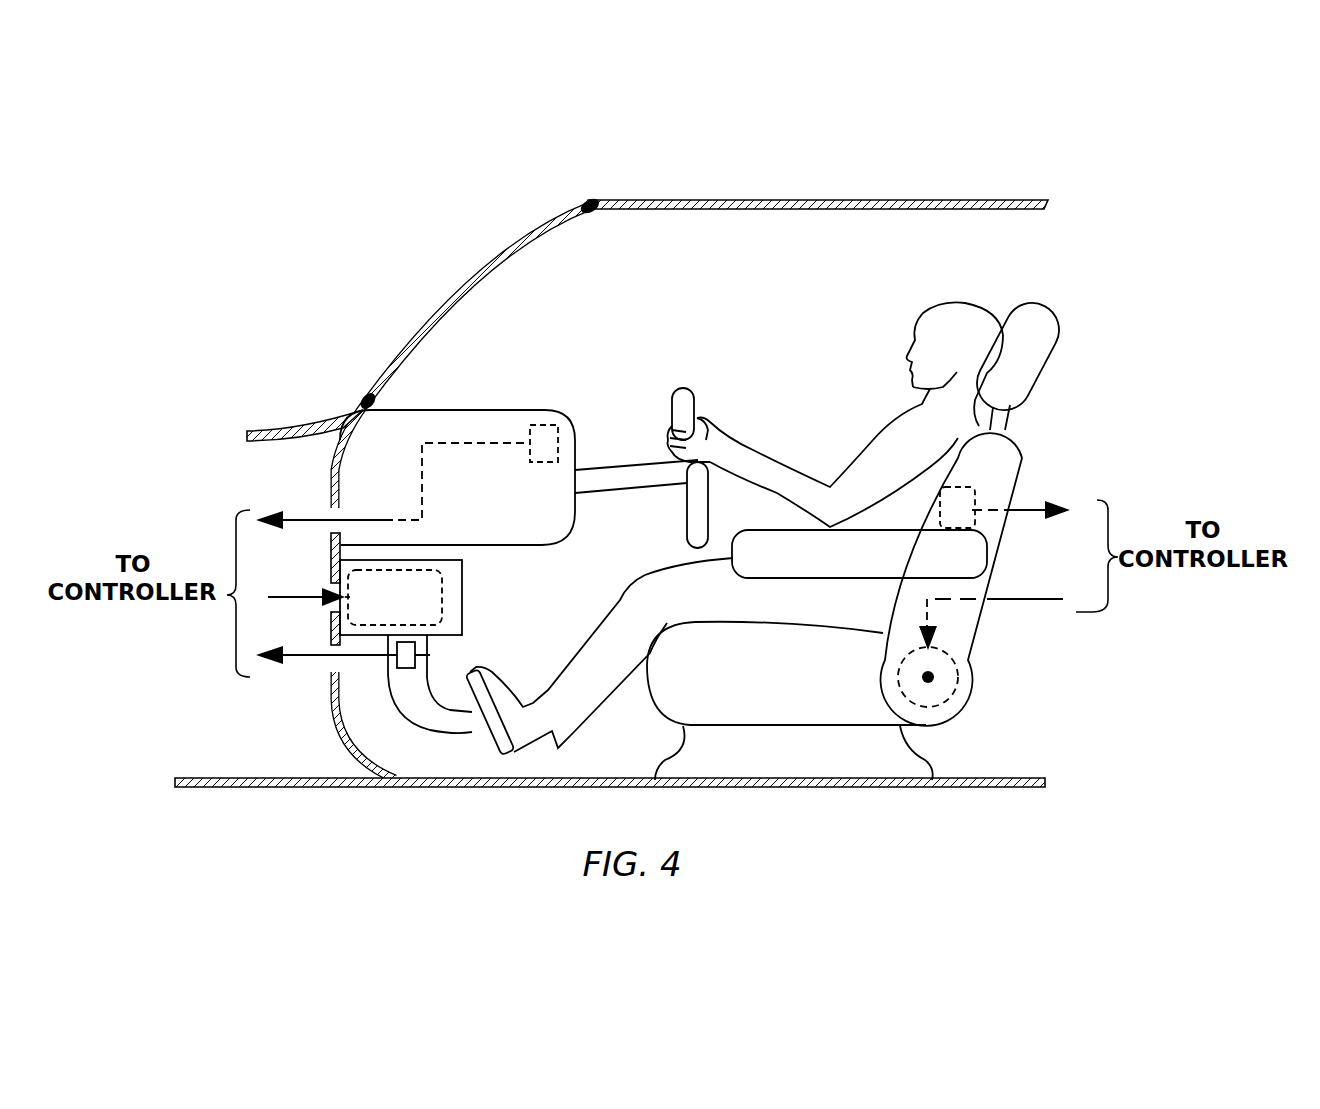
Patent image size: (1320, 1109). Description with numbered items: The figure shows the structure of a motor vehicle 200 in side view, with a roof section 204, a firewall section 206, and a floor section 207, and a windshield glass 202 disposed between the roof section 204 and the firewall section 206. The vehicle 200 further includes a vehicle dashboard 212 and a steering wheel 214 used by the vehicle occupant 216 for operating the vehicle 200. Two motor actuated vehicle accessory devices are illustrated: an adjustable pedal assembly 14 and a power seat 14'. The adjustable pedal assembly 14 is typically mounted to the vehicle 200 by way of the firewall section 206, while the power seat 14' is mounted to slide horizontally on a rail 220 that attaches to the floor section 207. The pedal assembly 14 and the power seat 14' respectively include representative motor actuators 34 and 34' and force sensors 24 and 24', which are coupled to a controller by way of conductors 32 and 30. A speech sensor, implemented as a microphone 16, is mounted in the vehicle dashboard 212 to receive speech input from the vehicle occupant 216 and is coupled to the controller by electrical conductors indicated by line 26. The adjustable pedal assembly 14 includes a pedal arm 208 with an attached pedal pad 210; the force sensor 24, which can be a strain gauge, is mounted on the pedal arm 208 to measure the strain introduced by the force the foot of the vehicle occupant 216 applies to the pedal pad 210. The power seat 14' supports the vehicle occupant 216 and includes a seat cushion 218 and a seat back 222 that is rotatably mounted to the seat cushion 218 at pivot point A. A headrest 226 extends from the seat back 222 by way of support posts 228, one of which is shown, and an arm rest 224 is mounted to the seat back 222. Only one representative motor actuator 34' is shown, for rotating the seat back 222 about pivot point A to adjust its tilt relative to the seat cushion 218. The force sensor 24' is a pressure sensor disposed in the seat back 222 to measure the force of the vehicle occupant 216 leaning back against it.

The motor vehicle 200 is at (519, 180).
The windshield glass 202 is at (490, 270).
The roof section 204 is at (830, 202).
The firewall section 206 is at (333, 569).
The floor section 207 is at (955, 790).
The pedal arm 208 is at (412, 717).
The pedal pad 210 is at (490, 738).
The vehicle dashboard 212 is at (478, 410).
The steering wheel 214 is at (683, 385).
The vehicle occupant 216 is at (877, 441).
The seat cushion 218 is at (803, 688).
The rail 220 is at (845, 763).
The seat back 222 is at (968, 637).
The arm rest 224 is at (806, 563).
The headrest 226 is at (1040, 333).
The support posts 228 is at (1003, 423).
The adjustable pedal assembly 14 is at (451, 597).
The power seat 14' is at (1133, 295).
The microphone 16 is at (558, 443).
The force sensor 24 is at (468, 648).
The force sensor 24' is at (1010, 475).
The electrical conductors 26 is at (292, 513).
The conductors 30 is at (290, 660).
The conductors 32 is at (300, 598).
The motor actuator 34 is at (465, 588).
The motor actuator 34' is at (1008, 711).
The pivot point A is at (920, 676).